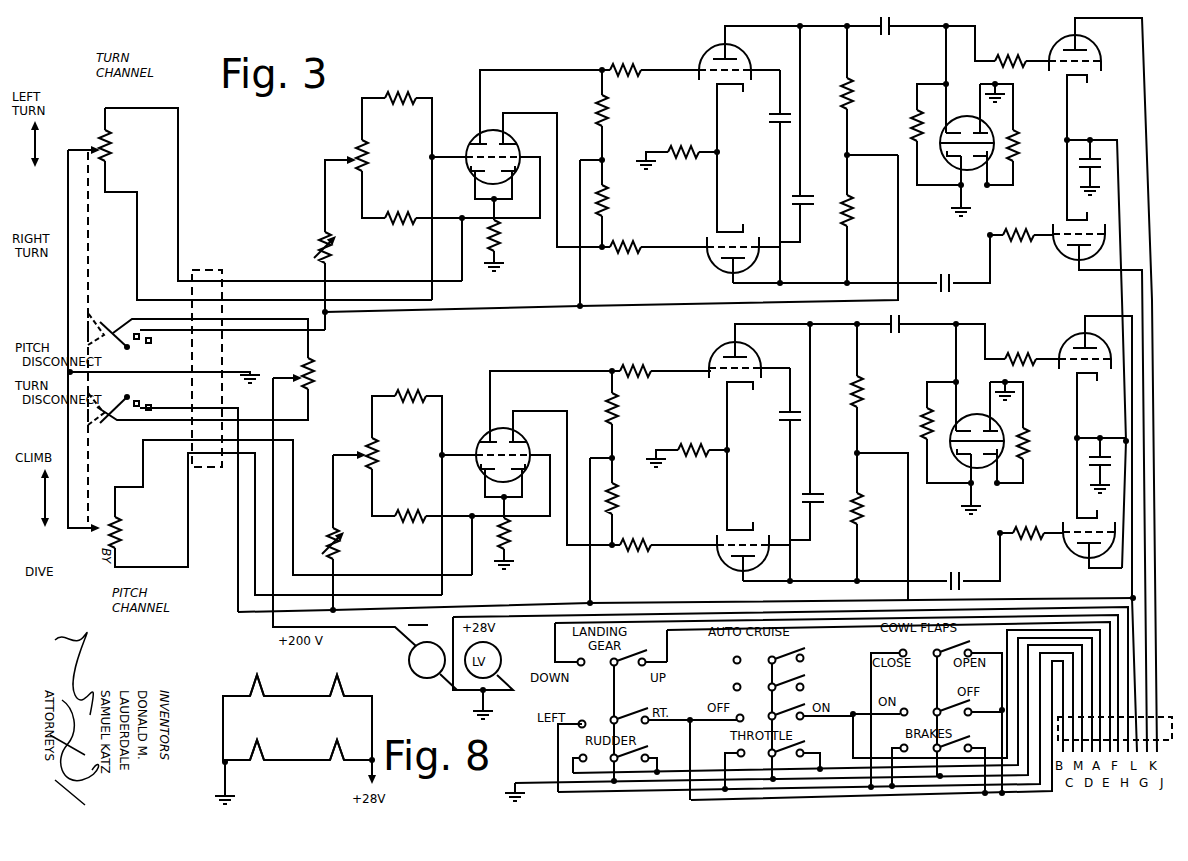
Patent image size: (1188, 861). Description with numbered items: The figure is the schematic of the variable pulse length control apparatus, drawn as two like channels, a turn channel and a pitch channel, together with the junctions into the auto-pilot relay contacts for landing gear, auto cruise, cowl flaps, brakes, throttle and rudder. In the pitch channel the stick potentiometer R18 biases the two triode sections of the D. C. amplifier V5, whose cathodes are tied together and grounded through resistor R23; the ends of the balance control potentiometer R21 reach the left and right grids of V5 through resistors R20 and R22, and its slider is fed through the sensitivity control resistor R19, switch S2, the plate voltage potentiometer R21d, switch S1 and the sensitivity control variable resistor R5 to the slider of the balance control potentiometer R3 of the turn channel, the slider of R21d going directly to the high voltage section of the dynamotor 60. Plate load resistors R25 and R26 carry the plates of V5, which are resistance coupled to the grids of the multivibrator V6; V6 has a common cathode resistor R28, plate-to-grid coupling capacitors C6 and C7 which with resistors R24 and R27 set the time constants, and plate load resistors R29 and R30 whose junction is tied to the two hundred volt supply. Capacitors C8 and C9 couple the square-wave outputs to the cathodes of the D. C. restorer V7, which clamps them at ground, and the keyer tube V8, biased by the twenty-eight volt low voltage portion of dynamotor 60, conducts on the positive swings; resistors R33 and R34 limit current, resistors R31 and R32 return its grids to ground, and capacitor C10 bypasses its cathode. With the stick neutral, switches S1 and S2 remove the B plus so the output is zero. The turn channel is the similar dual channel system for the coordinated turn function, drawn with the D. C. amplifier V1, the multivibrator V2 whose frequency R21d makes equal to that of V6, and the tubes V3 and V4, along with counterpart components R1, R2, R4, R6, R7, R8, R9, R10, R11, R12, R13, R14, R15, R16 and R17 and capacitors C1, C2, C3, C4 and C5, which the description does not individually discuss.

In FIG. 3, the turn channel potentiometer R1 is at (280, 204).
In FIG. 3, the resistor R2 is at (397, 188).
In FIG. 3, the balance control potentiometer R3 is at (376, 179).
In FIG. 3, the resistor R4 is at (423, 239).
In FIG. 3, the sensitivity control variable resistor R5 is at (325, 243).
In FIG. 3, the cathode resistor R6 is at (503, 235).
In FIG. 3, the resistor R7 is at (650, 61).
In FIG. 3, the resistor R8 is at (613, 115).
In FIG. 3, the resistor R9 is at (605, 233).
In FIG. 3, the resistor R10 is at (654, 255).
In FIG. 3, the resistor R11 is at (678, 147).
In FIG. 3, the resistor R12 is at (862, 90).
In FIG. 3, the resistor R13 is at (869, 219).
In FIG. 3, the resistor R14 is at (920, 134).
In FIG. 3, the resistor R15 is at (1014, 133).
In FIG. 3, the resistor R16 is at (1022, 53).
In FIG. 3, the resistor R17 is at (1020, 226).
In FIG. 3, the stick potentiometer R18 is at (290, 517).
In FIG. 3, the sensitivity control resistor R19 is at (346, 534).
In FIG. 3, the resistor R20 is at (407, 484).
In FIG. 3, the balance control potentiometer R21 is at (369, 477).
In FIG. 3, the plate voltage potentiometer R21d is at (344, 502).
In FIG. 3, the resistor R22 is at (432, 535).
In FIG. 3, the cathode resistor R23 is at (517, 533).
In FIG. 3, the time constant resistor R24 is at (661, 361).
In FIG. 3, the plate load resistor R25 is at (628, 414).
In FIG. 3, the plate load resistor R26 is at (620, 530).
In FIG. 3, the time constant resistor R27 is at (664, 554).
In FIG. 3, the common cathode resistor R28 is at (688, 446).
In FIG. 3, the plate load resistor R29 is at (872, 388).
In FIG. 3, the plate load resistor R30 is at (879, 526).
In FIG. 3, the grid resistor R31 is at (930, 432).
In FIG. 3, the grid resistor R32 is at (1024, 431).
In FIG. 3, the current limiting resistor R33 is at (1032, 351).
In FIG. 3, the current limiting resistor R34 is at (1030, 524).
In FIG. 3, the capacitor C1 is at (771, 176).
In FIG. 3, the capacitor C2 is at (803, 132).
In FIG. 3, the coupling capacitor C3 is at (897, 31).
In FIG. 3, the capacitor C4 is at (861, 263).
In FIG. 3, the capacitor C5 is at (1096, 167).
In FIG. 3, the plate to grid coupling capacitor C6 is at (780, 474).
In FIG. 3, the plate to grid coupling capacitor C7 is at (813, 430).
In FIG. 3, the coupling capacitor C8 is at (907, 337).
In FIG. 3, the coupling capacitor C9 is at (871, 561).
In FIG. 3, the cathode bypass capacitor C10 is at (1104, 465).
In FIG. 3, the D. C. amplifier tube V1 is at (534, 158).
In FIG. 8, the D. C. amplifier tube V1 is at (256, 694).
In FIG. 3, the multivibrator V2 is at (740, 152).
In FIG. 8, the multivibrator V2 is at (338, 694).
In FIG. 3, the vacuum tube V3 is at (967, 121).
In FIG. 8, the vacuum tube V3 is at (338, 760).
In FIG. 3, the output vacuum tube V4 is at (1096, 378).
In FIG. 8, the output vacuum tube V4 is at (256, 760).
In FIG. 3, the D. C. amplifier tube V5 is at (544, 458).
In FIG. 3, the multivibrator V6 is at (759, 452).
In FIG. 3, the D. C. restorer V7 is at (977, 419).
In FIG. 3, the keyer tube V8 is at (1092, 526).
In FIG. 3, the switch S1 is at (206, 335).
In FIG. 3, the switch S2 is at (198, 500).
In FIG. 3, the dynamotor 60 is at (432, 650).